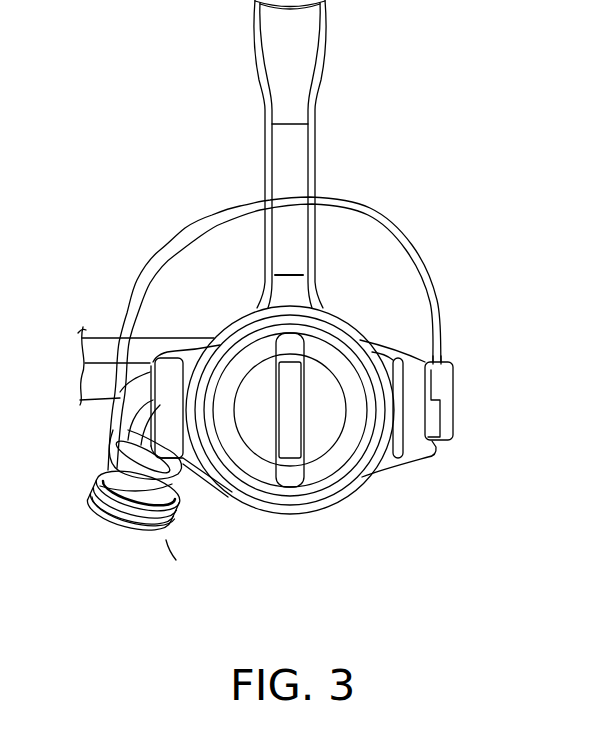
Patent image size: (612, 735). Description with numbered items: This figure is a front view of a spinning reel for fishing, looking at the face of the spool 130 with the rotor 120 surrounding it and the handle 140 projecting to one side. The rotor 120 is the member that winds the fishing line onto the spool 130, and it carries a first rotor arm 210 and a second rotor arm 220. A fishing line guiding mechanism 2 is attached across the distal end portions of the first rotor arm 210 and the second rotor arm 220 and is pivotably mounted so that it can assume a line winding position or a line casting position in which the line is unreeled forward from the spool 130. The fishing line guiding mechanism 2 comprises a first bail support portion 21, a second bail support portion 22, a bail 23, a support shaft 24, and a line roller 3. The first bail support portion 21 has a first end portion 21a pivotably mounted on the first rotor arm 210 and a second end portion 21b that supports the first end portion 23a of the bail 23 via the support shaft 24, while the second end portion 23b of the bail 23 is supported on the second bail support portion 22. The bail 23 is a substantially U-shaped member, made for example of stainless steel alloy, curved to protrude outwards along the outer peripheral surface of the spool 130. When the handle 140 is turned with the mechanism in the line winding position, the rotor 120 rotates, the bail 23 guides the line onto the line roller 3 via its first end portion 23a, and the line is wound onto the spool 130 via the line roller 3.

The fishing line guiding mechanism 2 is at (172, 560).
The line roller 3 is at (92, 476).
The first bail support portion 21 is at (134, 536).
The first end portion 21a is at (143, 390).
The second end portion 21b is at (105, 523).
The second bail support portion 22 is at (438, 384).
The bail 23 is at (393, 220).
The first end portion 23a is at (122, 465).
The second end portion 23b is at (449, 343).
The support shaft 24 is at (124, 447).
The rotor 120 is at (413, 467).
The spool 130 is at (253, 490).
The handle 140 is at (113, 338).
The first rotor arm 210 is at (168, 357).
The second rotor arm 220 is at (414, 360).